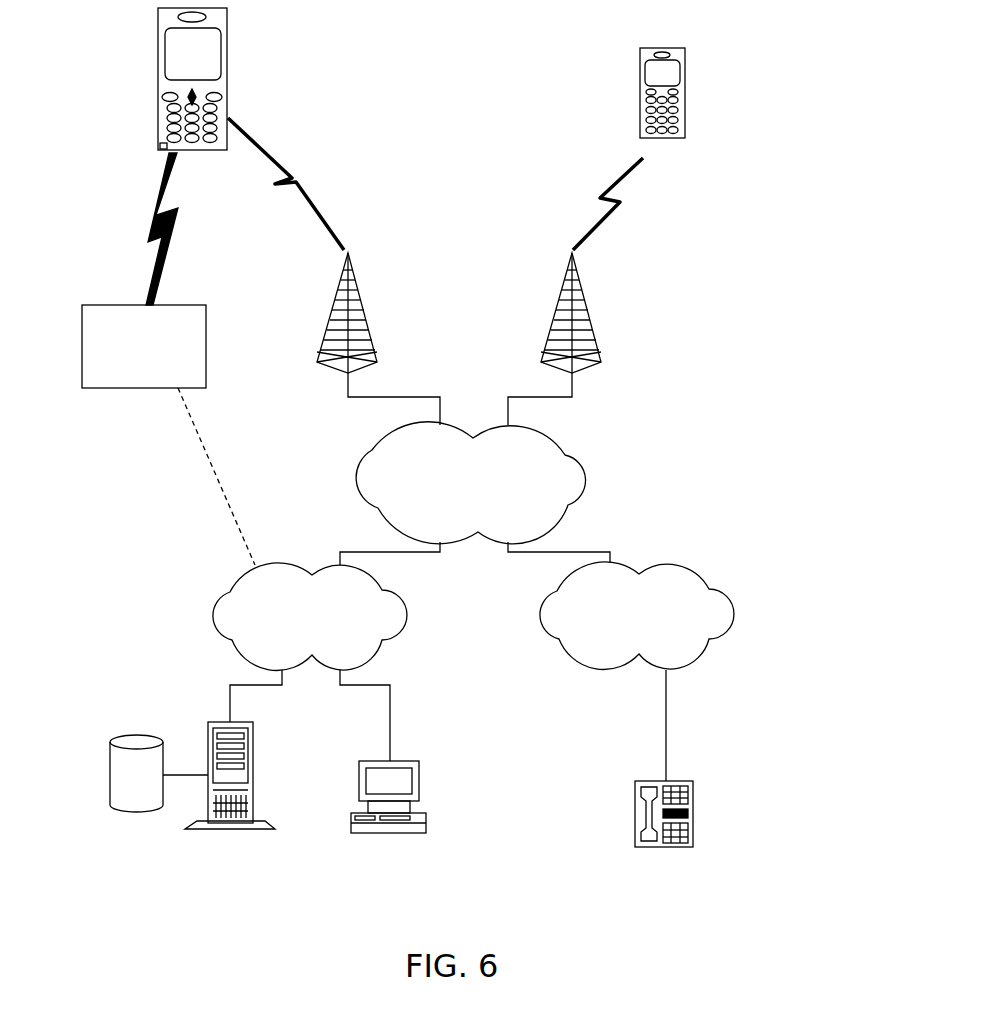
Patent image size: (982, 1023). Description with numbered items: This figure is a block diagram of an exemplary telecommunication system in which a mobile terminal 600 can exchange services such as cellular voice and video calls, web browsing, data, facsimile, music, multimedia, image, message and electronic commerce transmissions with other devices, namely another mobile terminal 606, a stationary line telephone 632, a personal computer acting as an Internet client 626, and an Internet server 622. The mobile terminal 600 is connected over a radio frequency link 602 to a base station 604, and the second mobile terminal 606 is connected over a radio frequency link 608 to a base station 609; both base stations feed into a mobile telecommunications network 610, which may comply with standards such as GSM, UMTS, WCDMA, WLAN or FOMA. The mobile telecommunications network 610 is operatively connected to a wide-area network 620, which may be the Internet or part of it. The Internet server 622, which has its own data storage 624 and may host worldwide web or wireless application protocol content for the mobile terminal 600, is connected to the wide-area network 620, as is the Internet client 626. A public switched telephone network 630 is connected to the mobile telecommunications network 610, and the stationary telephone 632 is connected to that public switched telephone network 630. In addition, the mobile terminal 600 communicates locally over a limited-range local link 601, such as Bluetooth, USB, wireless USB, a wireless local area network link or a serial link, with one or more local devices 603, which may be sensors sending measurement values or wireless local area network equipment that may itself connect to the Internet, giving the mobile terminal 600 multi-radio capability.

The mobile terminal 600 is at (155, 90).
The local link 601 is at (143, 228).
The radio frequency link 602 is at (290, 172).
The local devices 603 is at (113, 390).
The base station 604 is at (344, 302).
The mobile terminal 606 is at (655, 48).
The radio frequency link 608 is at (592, 196).
The base station 609 is at (560, 292).
The mobile telecommunications network 610 is at (358, 478).
The wide-area network 620 is at (228, 594).
The Internet server 622 is at (208, 752).
The data storage 624 is at (131, 742).
The personal computer (Internet client) 626 is at (408, 761).
The public switched telephone network 630 is at (735, 613).
The stationary telephone 632 is at (637, 800).